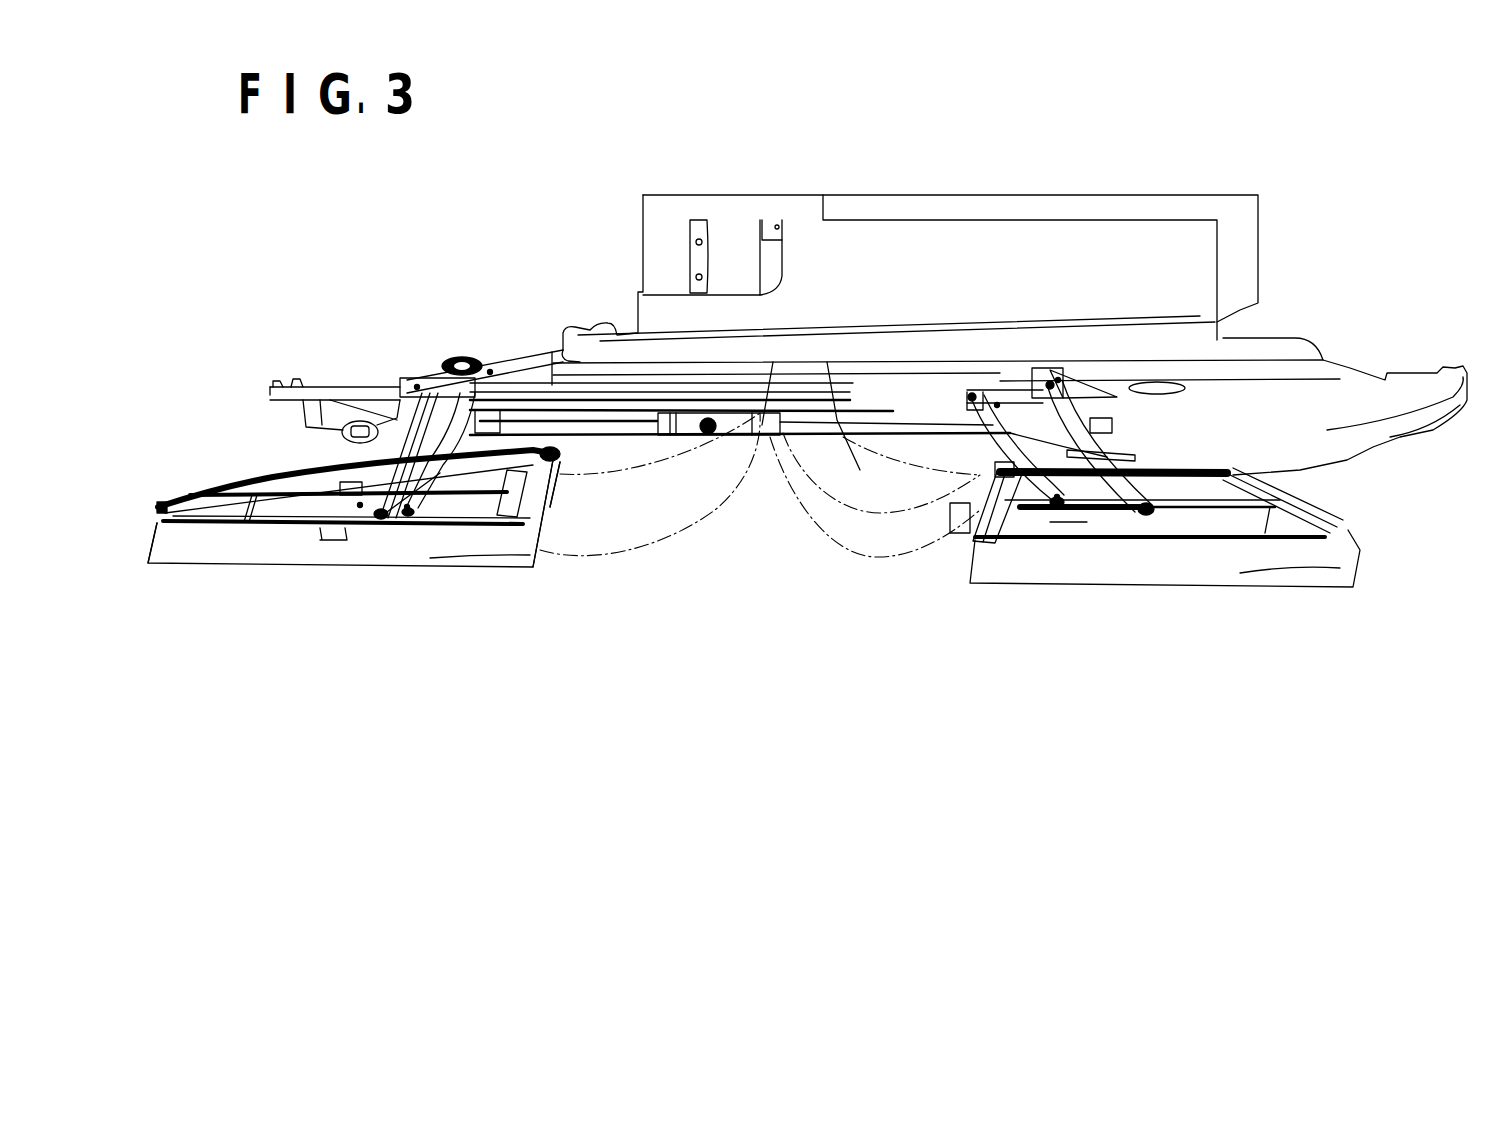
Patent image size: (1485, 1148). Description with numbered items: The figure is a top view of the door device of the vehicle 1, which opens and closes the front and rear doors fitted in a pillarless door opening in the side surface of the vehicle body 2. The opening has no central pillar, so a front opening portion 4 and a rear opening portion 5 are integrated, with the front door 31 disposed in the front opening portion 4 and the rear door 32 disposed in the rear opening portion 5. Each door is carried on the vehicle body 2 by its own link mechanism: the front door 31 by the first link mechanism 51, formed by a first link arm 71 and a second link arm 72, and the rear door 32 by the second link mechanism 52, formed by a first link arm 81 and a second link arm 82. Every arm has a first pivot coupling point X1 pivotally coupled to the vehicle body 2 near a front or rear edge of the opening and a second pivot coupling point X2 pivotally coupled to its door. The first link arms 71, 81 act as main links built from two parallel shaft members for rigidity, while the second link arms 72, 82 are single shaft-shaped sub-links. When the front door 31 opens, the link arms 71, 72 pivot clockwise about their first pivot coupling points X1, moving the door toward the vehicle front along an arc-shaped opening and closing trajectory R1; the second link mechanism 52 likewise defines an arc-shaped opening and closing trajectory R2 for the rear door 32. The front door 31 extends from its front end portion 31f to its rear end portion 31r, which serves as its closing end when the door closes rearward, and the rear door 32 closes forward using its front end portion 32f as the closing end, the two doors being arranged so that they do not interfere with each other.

The vehicle 1 is at (196, 865).
The vehicle body 2 is at (1373, 452).
The front opening portion 4 is at (592, 420).
The rear opening portion 5 is at (837, 420).
The front door 31 is at (197, 567).
The front end portion of the front door 31f is at (157, 557).
The rear end portion of the front door 31r is at (540, 508).
The rear door 32 is at (1227, 587).
The front end portion of the rear door 32f is at (975, 550).
The first link mechanism 51 is at (322, 442).
The second link mechanism 52 is at (1135, 444).
The first link arm 71 is at (436, 495).
The second link arm 72 is at (372, 500).
The first link arm 81 is at (1150, 470).
The second link arm 82 is at (1037, 400).
The first pivot coupling point X1 is at (417, 387).
The second pivot coupling point X2 is at (360, 505).
The opening and closing trajectory of the front door R1 is at (648, 562).
The opening and closing trajectory of the rear door R2 is at (852, 558).